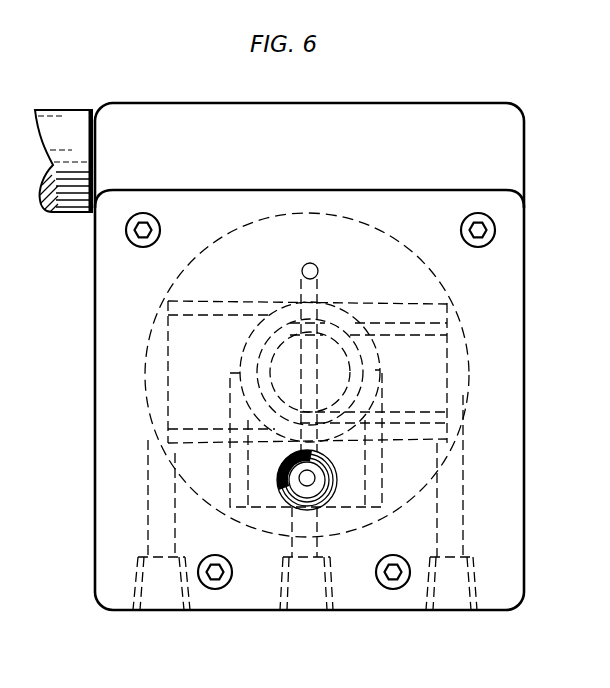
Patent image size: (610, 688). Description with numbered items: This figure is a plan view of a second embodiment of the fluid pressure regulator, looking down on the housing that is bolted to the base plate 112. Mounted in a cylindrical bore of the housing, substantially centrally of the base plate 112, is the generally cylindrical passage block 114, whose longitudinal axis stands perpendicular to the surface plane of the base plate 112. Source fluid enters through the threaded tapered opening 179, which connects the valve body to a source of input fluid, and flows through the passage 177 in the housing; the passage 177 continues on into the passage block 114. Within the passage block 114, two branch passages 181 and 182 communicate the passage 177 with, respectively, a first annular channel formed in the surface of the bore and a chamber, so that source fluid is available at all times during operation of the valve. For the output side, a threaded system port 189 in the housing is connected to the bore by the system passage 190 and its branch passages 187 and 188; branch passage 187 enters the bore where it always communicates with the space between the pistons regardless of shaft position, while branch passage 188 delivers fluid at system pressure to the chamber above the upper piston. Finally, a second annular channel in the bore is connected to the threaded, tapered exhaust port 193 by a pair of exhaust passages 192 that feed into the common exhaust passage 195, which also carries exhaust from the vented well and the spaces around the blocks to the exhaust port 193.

The base plate 112 is at (512, 312).
The passage block 114 is at (365, 244).
The passage 177 is at (170, 518).
The threaded tapered opening 179 is at (153, 612).
The branch passage 181 is at (235, 304).
The branch passage 182 is at (192, 430).
The branch passage 187 is at (428, 416).
The branch passage 188 is at (418, 312).
The system port 189 is at (433, 612).
The system passage 190 is at (447, 508).
The exhaust passages 192 is at (236, 475).
The exhaust port 193 is at (292, 611).
The common exhaust passage 195 is at (276, 516).